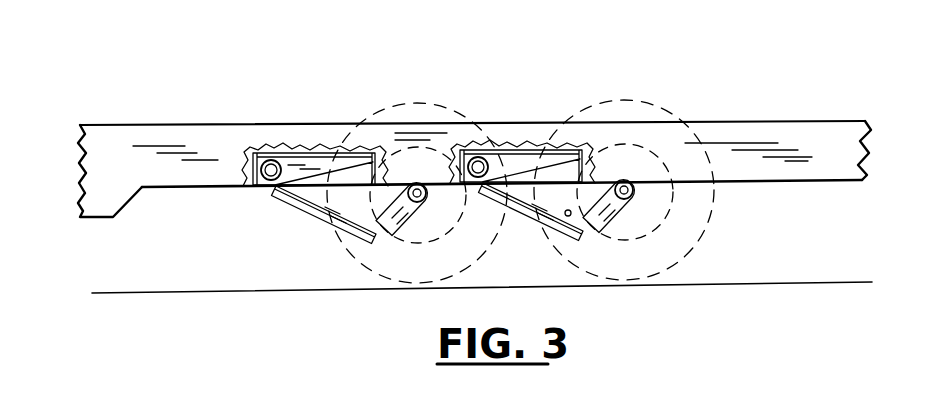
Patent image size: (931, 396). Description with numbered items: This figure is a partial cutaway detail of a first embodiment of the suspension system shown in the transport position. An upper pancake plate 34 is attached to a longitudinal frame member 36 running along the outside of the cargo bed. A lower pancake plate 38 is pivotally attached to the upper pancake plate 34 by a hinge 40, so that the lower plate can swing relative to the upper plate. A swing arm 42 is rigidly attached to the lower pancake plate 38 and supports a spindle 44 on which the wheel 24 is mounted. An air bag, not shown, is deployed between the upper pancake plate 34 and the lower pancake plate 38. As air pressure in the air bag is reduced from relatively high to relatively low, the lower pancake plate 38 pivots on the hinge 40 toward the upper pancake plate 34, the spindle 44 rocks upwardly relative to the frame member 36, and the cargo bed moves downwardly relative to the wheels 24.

The wheel 24 is at (410, 101).
The upper pancake plate 34 is at (315, 170).
The longitudinal frame member 36 is at (185, 125).
The lower pancake plate 38 is at (321, 197).
The hinge 40 is at (268, 181).
The swing arm 42 is at (393, 235).
The spindle 44 is at (488, 251).